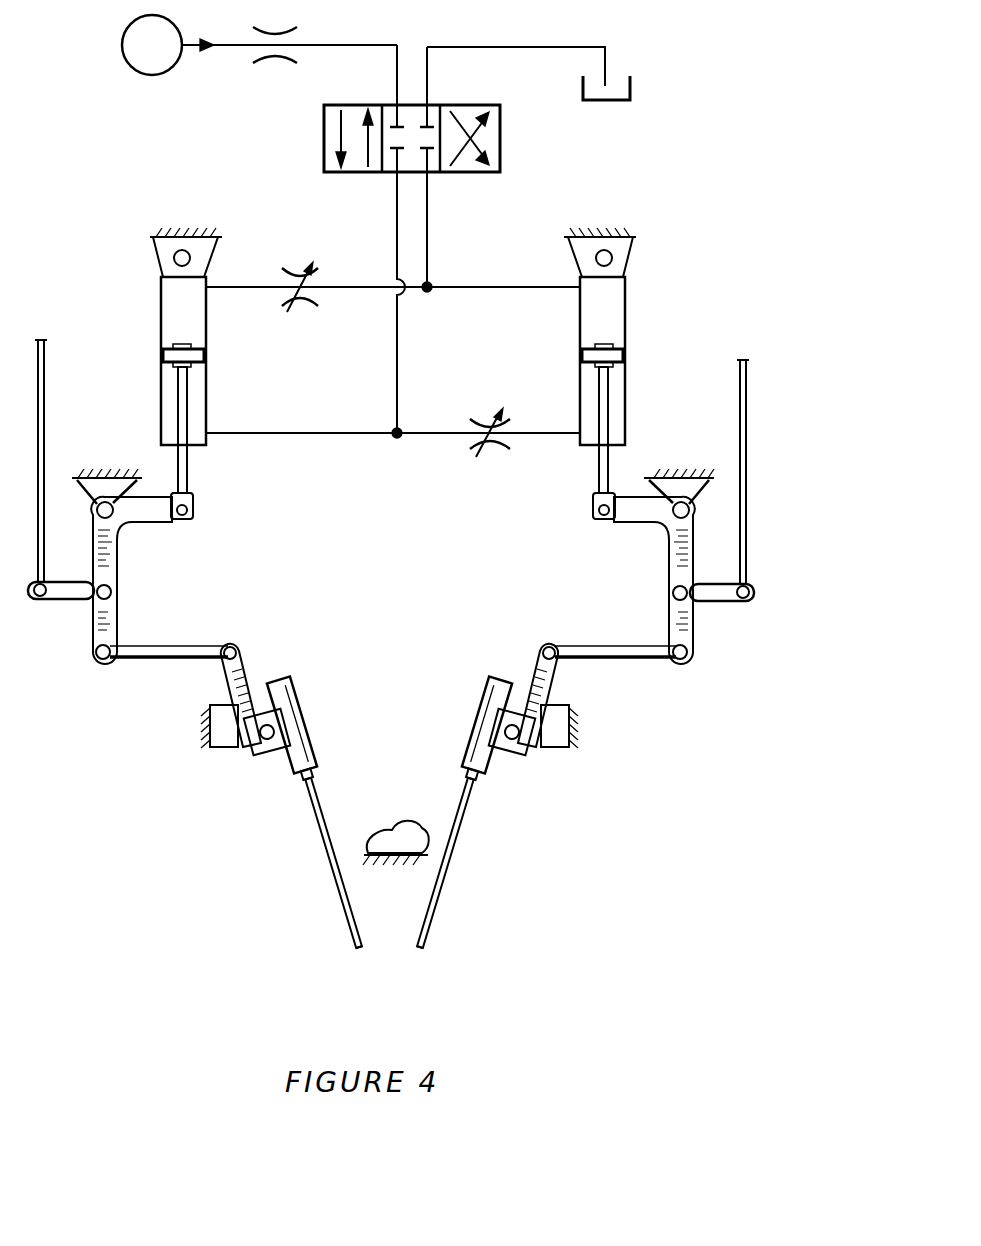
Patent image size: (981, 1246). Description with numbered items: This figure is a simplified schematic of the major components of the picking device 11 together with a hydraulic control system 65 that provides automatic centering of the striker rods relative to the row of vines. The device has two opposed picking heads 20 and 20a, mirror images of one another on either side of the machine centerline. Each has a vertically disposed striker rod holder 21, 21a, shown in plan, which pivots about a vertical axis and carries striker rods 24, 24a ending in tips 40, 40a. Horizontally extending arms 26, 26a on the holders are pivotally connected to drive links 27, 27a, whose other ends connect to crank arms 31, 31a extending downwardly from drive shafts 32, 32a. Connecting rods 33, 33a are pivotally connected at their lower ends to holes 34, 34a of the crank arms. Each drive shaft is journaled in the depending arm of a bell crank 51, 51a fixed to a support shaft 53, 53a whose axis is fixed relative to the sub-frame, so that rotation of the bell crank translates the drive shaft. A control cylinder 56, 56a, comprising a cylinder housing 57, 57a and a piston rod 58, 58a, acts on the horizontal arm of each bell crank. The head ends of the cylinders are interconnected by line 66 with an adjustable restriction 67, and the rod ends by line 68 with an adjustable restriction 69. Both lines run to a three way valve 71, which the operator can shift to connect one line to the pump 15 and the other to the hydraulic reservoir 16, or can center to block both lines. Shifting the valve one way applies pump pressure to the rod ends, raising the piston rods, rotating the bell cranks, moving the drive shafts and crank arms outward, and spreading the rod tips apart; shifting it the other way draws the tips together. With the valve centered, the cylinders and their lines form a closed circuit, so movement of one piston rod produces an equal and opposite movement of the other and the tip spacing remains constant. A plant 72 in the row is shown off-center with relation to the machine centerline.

The picking device 11 is at (238, 902).
The pump 15 is at (172, 70).
The hydraulic reservoir 16 is at (608, 102).
The picking head 20 is at (538, 812).
The picking head 20a is at (200, 799).
The striker rod holder 21 is at (506, 744).
The striker rod holder 21a is at (268, 746).
The striker rod 24 is at (437, 888).
The striker rod 24a is at (341, 870).
The arm 26 is at (538, 672).
The arm 26a is at (242, 672).
The drive link 27 is at (612, 658).
The drive link 27a is at (155, 658).
The crank arm 31 is at (670, 626).
The crank arm 31a is at (99, 660).
The drive shaft 32 is at (672, 595).
The drive shaft 32a is at (112, 592).
The connecting rod 33 is at (738, 405).
The connecting rod 33a is at (44, 404).
The hole 34 is at (718, 601).
The hole 34a is at (60, 600).
The tip 40 is at (414, 958).
The tip 40a is at (358, 958).
The bell crank 51 is at (668, 534).
The bell crank 51a is at (118, 533).
The support shaft 53 is at (681, 500).
The support shaft 53a is at (106, 500).
The control cylinder 56 is at (566, 345).
The control cylinder 56a is at (214, 356).
The cylinder housing 57 is at (628, 313).
The cylinder housing 57a is at (158, 328).
The piston rod 58 is at (598, 477).
The piston rod 58a is at (190, 470).
The hydraulic control system 65 is at (388, 478).
The line 66 is at (497, 280).
The adjustable restriction 67 is at (294, 272).
The line 68 is at (322, 433).
The adjustable restriction 69 is at (484, 418).
The three way valve 71 is at (500, 140).
The plant 72 is at (398, 836).